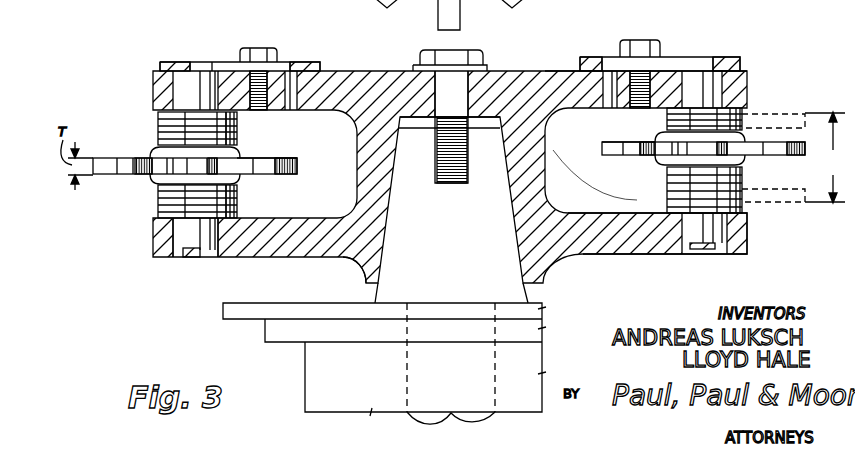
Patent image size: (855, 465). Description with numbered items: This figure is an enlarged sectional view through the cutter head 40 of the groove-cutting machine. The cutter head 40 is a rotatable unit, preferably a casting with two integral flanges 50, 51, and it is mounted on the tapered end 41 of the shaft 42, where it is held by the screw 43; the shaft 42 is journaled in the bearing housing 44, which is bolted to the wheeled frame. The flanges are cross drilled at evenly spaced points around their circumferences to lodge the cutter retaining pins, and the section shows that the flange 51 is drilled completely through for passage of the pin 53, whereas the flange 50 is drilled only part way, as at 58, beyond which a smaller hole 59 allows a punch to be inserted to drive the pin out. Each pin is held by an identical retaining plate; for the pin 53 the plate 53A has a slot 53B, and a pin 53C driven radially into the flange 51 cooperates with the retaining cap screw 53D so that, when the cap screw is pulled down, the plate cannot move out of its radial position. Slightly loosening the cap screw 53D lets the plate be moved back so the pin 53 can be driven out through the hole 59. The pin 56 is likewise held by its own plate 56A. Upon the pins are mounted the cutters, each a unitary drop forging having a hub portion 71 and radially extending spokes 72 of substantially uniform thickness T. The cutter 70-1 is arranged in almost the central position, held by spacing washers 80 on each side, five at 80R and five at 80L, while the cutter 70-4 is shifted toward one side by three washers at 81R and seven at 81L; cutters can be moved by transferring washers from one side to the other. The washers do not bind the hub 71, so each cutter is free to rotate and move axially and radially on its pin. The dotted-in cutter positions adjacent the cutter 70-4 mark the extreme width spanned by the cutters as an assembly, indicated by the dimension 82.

The cutter head 40 is at (341, 70).
The tapered end 41 is at (347, 266).
The shaft 42 is at (451, 210).
The screw 43 is at (427, 58).
The bearing housing 44 is at (302, 344).
The flange 50 is at (607, 245).
The flange 51 is at (568, 82).
The pin 53 is at (180, 89).
The retaining plate 53A is at (178, 62).
The slot 53B is at (212, 62).
The pin 53C is at (290, 62).
The cap screw 53D is at (255, 48).
The pin 56 is at (715, 80).
The retaining plate 56A is at (725, 57).
The partial drilled hole 58 is at (180, 246).
The smaller hole 59 is at (197, 256).
The cutter 70-1 is at (278, 155).
The cutter 70-4 is at (626, 143).
The hub portion 71 is at (157, 178).
The spokes 72 is at (297, 166).
The spacing washers 80 is at (237, 135).
The washers on right side 80R is at (163, 132).
The washers on left side 80L is at (165, 208).
The washers on right side 81R is at (673, 117).
The washers on left side 81L is at (673, 190).
The cutting width dimension 82 is at (825, 157).